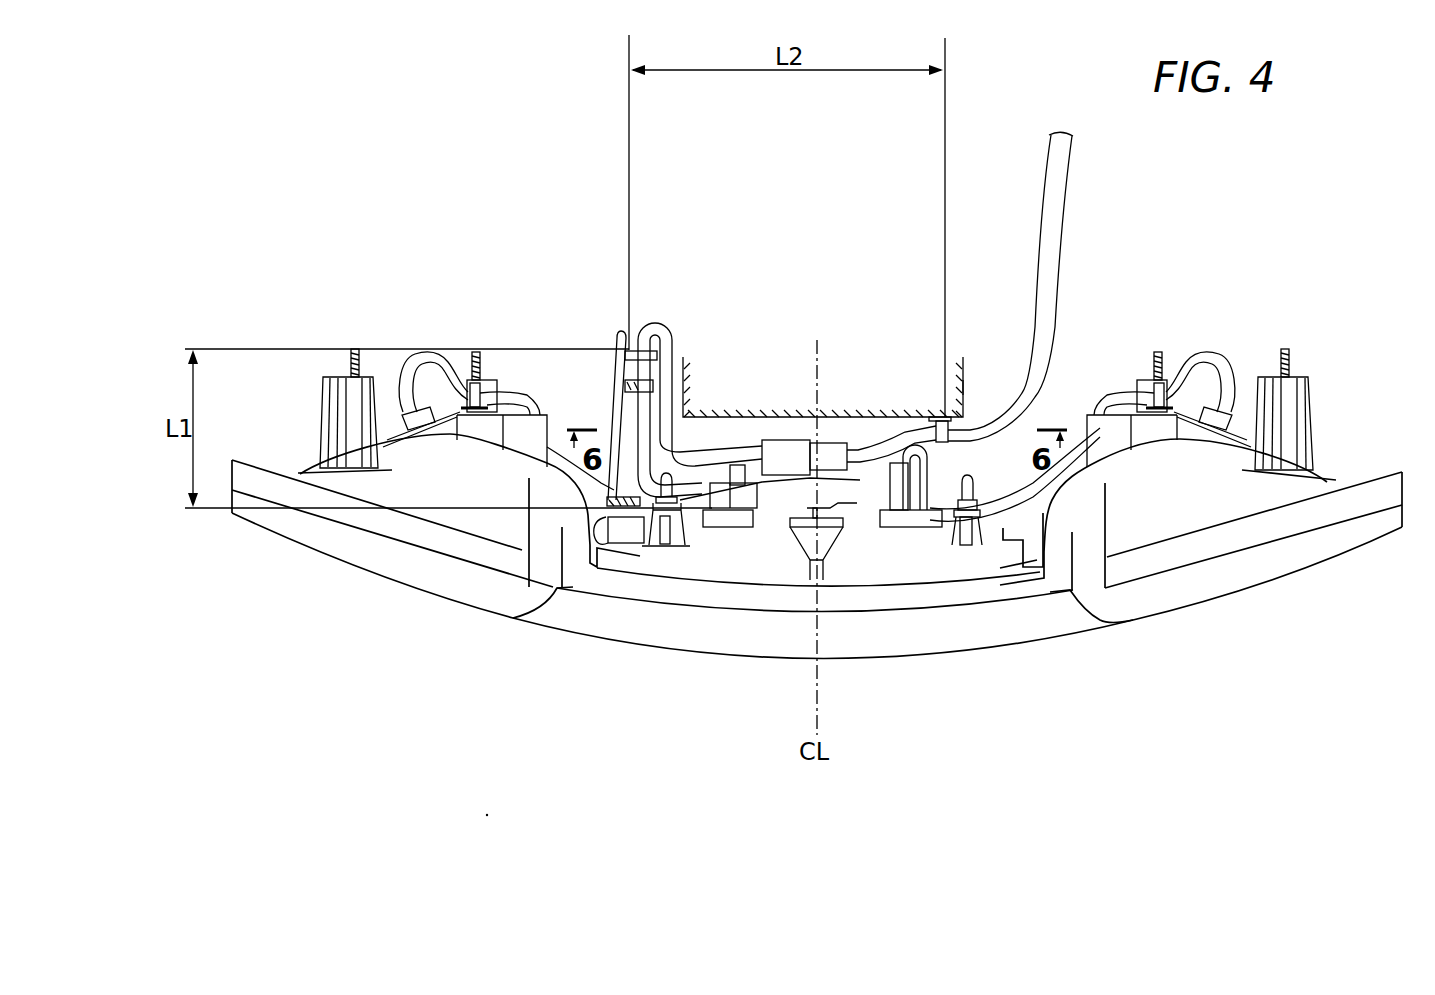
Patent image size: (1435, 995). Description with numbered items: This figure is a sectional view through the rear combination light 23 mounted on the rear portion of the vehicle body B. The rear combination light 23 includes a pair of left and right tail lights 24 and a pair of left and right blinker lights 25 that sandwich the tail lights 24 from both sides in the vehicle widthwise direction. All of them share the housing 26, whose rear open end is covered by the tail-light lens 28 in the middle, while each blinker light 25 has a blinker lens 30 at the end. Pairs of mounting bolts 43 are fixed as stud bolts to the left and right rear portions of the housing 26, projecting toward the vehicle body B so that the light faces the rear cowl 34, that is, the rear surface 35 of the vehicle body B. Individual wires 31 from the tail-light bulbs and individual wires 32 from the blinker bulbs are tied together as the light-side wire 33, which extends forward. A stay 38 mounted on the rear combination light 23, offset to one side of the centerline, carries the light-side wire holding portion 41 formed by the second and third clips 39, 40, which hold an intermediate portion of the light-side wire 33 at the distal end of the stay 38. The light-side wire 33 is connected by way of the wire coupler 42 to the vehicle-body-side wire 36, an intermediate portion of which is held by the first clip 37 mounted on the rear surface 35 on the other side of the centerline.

The rear combination light 23 is at (1342, 483).
The tail light 24 is at (621, 652).
The blinker light 25 is at (421, 603).
The housing 26 is at (1130, 485).
The tail-light lens 28 is at (877, 640).
The blinker lens 30 is at (326, 545).
The individual wire 31 is at (700, 467).
The individual wire 32 is at (434, 352).
The light-side wire 33 is at (652, 336).
The rear cowl 34 is at (963, 398).
The rear surface of the vehicle body 35 is at (856, 472).
The vehicle-body-side wire 36 is at (1057, 305).
The first clip 37 is at (950, 430).
The stay 38 is at (621, 330).
The second clip 39 is at (655, 387).
The third clip 40 is at (657, 360).
The light-side wire holding portion 41 is at (606, 383).
The wire coupler 42 is at (782, 462).
The mounting bolt 43 is at (354, 362).
The vehicle body B is at (974, 382).